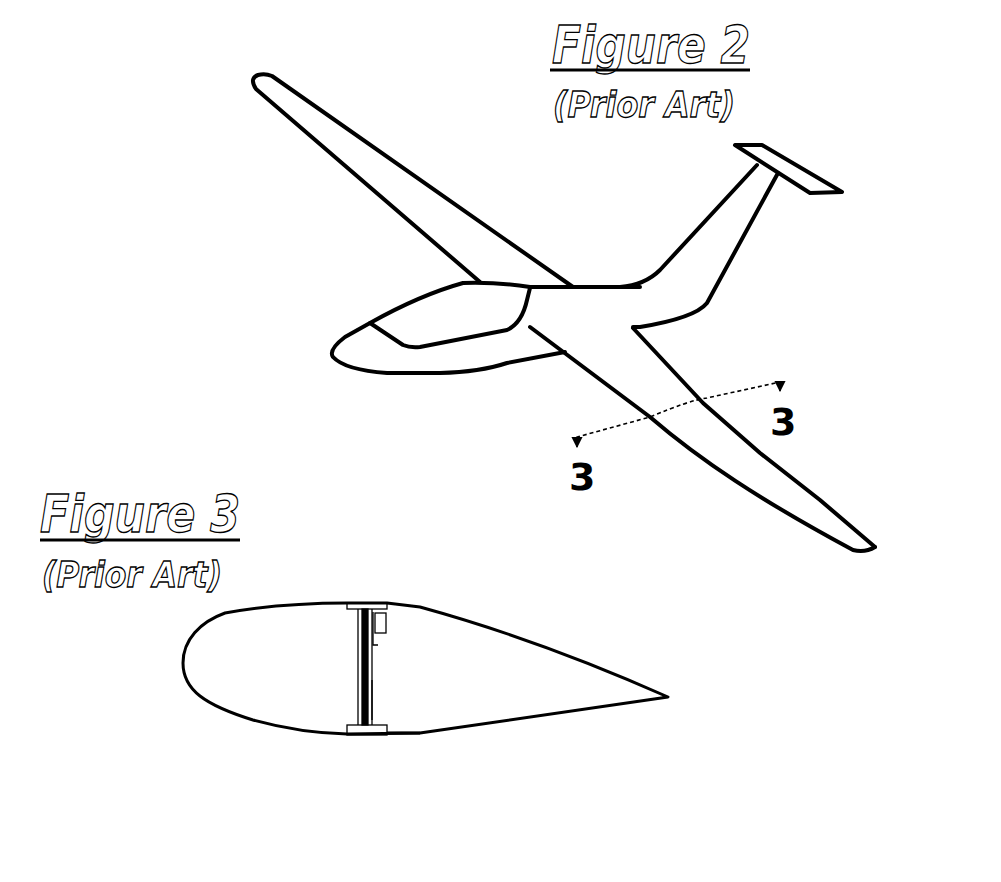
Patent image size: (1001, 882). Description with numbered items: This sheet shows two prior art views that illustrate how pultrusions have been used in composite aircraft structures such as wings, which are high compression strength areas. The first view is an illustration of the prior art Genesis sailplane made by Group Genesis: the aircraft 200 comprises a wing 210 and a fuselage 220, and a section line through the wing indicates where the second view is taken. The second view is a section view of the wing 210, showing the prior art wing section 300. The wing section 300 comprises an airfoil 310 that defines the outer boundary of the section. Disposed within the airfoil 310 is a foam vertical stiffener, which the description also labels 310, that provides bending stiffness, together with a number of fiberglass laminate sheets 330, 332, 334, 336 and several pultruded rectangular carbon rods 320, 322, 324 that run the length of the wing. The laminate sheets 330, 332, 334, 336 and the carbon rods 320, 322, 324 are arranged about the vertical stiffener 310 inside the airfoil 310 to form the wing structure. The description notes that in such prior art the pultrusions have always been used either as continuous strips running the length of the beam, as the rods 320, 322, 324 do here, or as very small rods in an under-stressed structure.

In FIG. 2, the aircraft 200 is at (489, 305).
In FIG. 2, the wing 210 is at (458, 193).
In FIG. 2, the fuselage 220 is at (410, 373).
In FIG. 3, the prior art wing section 300 is at (337, 689).
In FIG. 3, the airfoil 310 is at (183, 675).
In FIG. 3, the pultruded rectangular carbon rod 320 is at (347, 603).
In FIG. 3, the pultruded rectangular carbon rod 322 is at (350, 734).
In FIG. 3, the pultruded rectangular carbon rod 324 is at (390, 734).
In FIG. 3, the fiberglass laminate sheet 330 is at (358, 677).
In FIG. 3, the fiberglass laminate sheet 332 is at (372, 697).
In FIG. 3, the fiberglass laminate sheet 334 is at (388, 609).
In FIG. 3, the fiberglass laminate sheet 336 is at (386, 627).